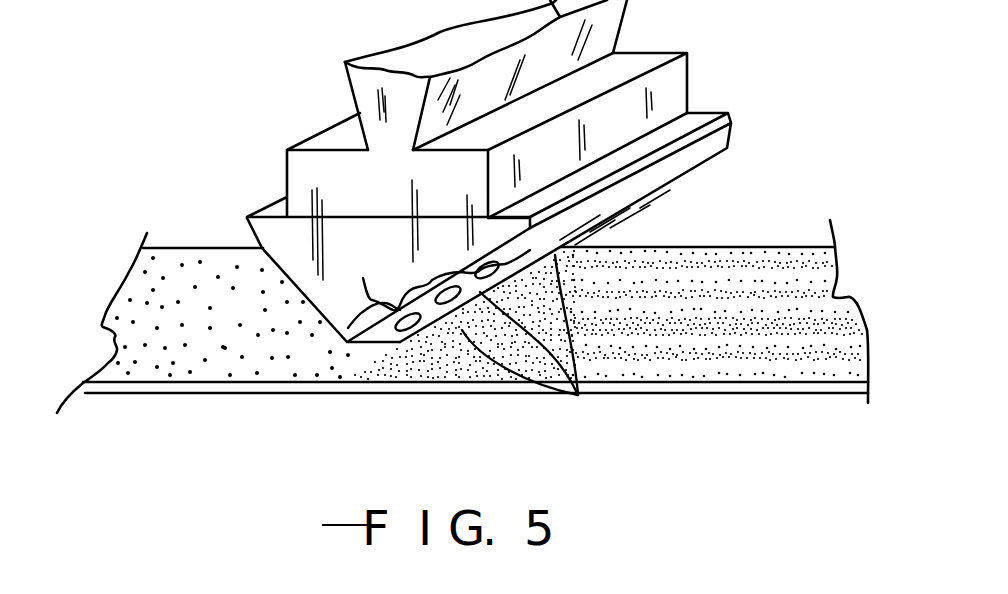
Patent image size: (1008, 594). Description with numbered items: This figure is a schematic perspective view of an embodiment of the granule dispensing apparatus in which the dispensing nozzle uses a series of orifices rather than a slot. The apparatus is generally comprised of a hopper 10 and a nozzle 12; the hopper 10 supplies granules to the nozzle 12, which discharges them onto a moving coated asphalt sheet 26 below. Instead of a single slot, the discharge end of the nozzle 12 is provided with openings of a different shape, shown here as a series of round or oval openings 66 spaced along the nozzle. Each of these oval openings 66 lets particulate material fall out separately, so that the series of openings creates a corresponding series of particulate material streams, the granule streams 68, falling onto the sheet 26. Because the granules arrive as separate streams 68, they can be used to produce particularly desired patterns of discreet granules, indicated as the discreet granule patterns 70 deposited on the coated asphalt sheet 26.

The hopper 10 is at (349, 78).
The nozzle 12 is at (672, 157).
The moving coated asphalt sheet 26 is at (704, 394).
The oval openings 66 is at (432, 283).
The granule streams 68 is at (413, 335).
The discreet granule patterns 70 is at (800, 324).